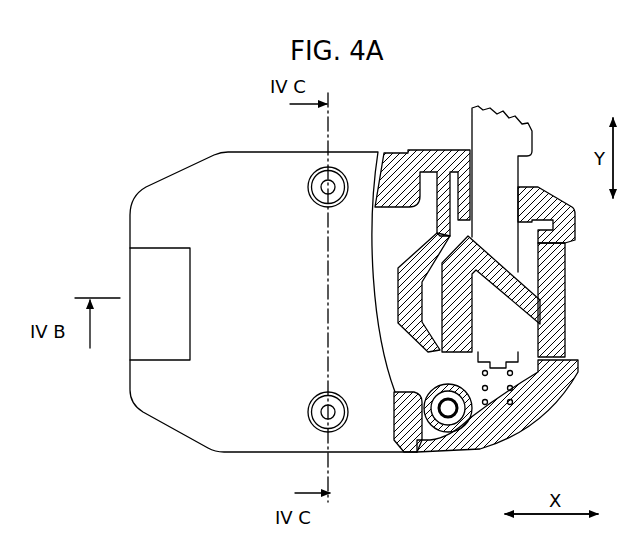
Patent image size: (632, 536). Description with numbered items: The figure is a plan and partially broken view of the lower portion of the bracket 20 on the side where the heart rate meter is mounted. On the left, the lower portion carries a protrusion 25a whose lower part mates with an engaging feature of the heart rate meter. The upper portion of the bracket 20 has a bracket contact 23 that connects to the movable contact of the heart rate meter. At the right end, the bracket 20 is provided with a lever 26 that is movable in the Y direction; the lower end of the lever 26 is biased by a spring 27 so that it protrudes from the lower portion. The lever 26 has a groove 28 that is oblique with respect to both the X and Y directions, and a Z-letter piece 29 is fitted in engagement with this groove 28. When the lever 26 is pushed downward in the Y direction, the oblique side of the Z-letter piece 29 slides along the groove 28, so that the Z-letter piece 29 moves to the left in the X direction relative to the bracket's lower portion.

The bracket 20 is at (175, 112).
The bracket contact 23 is at (310, 186).
The protrusion 25a is at (128, 330).
The lever 26 is at (502, 137).
The spring 27 is at (523, 393).
The groove 28 is at (502, 272).
The Z-letter piece 29 is at (553, 342).